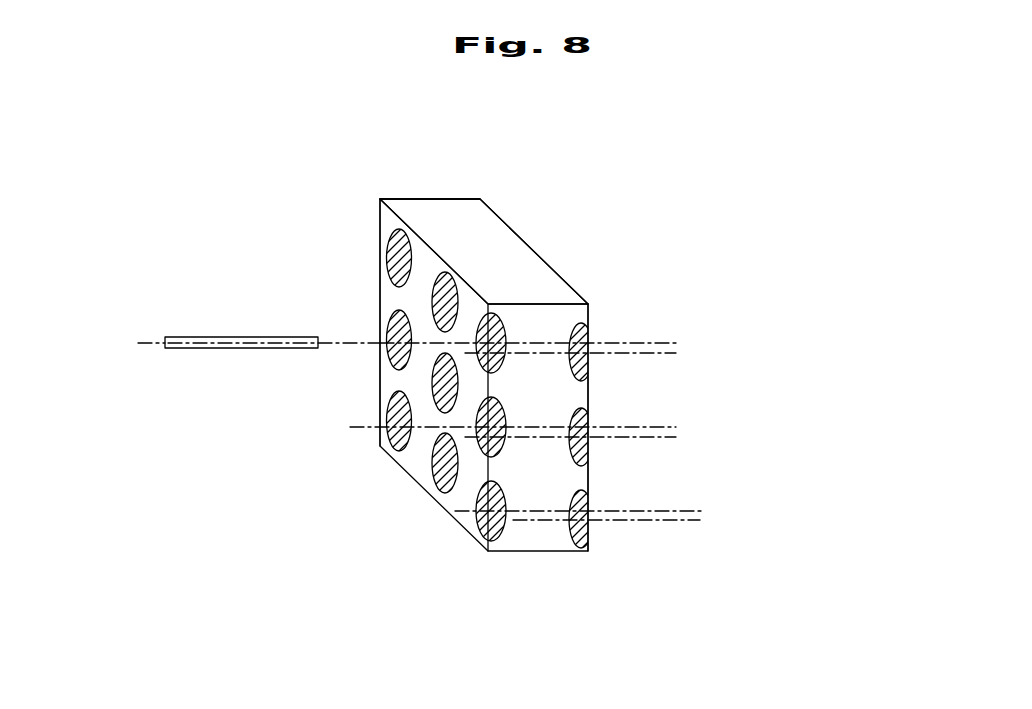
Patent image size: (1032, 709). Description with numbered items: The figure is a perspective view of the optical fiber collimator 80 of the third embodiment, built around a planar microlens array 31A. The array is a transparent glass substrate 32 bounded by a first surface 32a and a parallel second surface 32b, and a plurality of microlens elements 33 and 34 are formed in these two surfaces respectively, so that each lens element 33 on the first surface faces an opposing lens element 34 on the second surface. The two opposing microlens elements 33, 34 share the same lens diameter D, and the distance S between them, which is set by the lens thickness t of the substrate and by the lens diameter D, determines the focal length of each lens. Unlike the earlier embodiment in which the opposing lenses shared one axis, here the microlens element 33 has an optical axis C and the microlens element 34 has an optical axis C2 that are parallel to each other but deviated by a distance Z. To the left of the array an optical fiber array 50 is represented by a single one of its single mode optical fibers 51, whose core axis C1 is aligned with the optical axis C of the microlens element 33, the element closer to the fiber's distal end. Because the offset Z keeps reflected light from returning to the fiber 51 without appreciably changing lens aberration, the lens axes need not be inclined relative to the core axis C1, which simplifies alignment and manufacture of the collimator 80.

The optical fiber collimator 80 is at (357, 174).
The planar microlens array 31A is at (459, 195).
The glass substrate 32 is at (412, 198).
The first surface 32a is at (380, 215).
The second surface 32b is at (589, 311).
The microlens element 33 is at (393, 260).
The microlens element 34 is at (586, 328).
The optical fiber array 50 is at (222, 337).
The single mode optical fiber 51 is at (210, 350).
The optical axis C is at (347, 343).
The core axis C1 is at (160, 343).
The optical axis C2 is at (630, 355).
The distance between optical axes Z is at (684, 348).
The lens diameter D is at (468, 482).
The distance between opposing microlens elements S is at (506, 556).
The lens thickness t is at (488, 556).